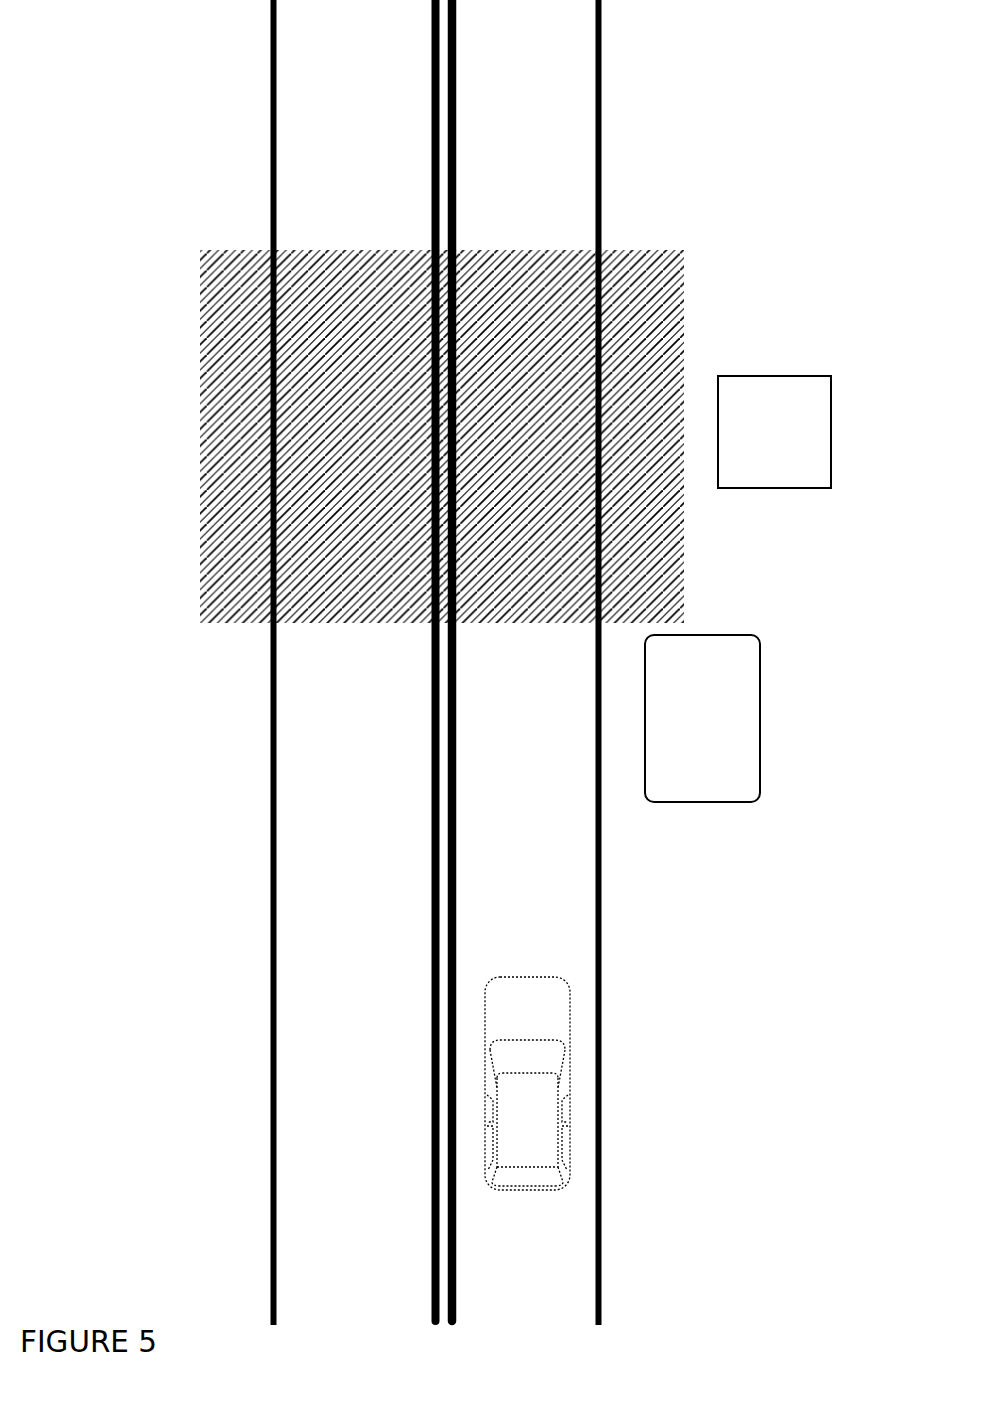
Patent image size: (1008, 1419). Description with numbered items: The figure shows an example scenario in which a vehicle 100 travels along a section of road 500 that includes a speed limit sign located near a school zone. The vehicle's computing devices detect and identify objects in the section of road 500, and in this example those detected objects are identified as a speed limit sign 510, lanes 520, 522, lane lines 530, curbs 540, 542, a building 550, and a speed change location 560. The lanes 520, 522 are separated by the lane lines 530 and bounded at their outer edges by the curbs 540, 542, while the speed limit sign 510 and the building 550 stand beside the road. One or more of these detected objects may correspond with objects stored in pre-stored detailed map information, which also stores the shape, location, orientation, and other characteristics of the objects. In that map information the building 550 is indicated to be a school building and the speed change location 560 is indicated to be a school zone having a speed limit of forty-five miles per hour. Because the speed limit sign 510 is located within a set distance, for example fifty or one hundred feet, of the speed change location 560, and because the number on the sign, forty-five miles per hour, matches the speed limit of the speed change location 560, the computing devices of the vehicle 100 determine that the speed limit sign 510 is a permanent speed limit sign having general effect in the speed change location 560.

The vehicle 100 is at (563, 1133).
The section of road 500 is at (107, 1313).
The speed limit sign 510 is at (747, 722).
The lane 520 is at (582, 1095).
The lane 522 is at (290, 1079).
The lane lines 530 is at (432, 1033).
The curb 540 is at (602, 1209).
The curb 542 is at (272, 1210).
The building 550 is at (755, 443).
The speed change location 560 is at (213, 450).